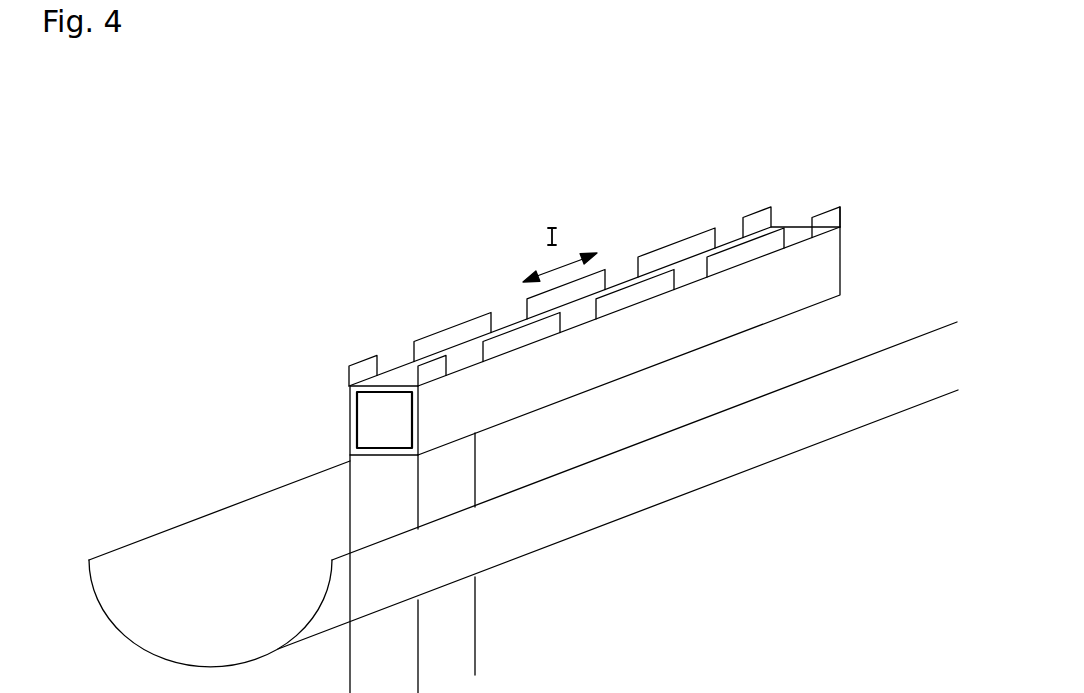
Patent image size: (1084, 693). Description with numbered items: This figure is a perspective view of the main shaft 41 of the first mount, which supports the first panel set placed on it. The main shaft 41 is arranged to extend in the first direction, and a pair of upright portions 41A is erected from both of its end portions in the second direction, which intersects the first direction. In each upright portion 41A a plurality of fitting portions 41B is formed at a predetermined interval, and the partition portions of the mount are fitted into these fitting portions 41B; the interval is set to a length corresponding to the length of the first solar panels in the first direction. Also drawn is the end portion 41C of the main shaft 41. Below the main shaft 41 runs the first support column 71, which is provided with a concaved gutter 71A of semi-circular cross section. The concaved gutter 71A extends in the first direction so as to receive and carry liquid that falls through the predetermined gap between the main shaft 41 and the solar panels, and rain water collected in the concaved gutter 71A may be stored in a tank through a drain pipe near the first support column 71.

The main shaft 41 is at (641, 278).
The upright portions 41A is at (675, 240).
The fitting portions 41B is at (618, 285).
The base end portion 41C is at (410, 372).
The first support column 71 is at (523, 494).
The concaved gutter 71A is at (687, 485).